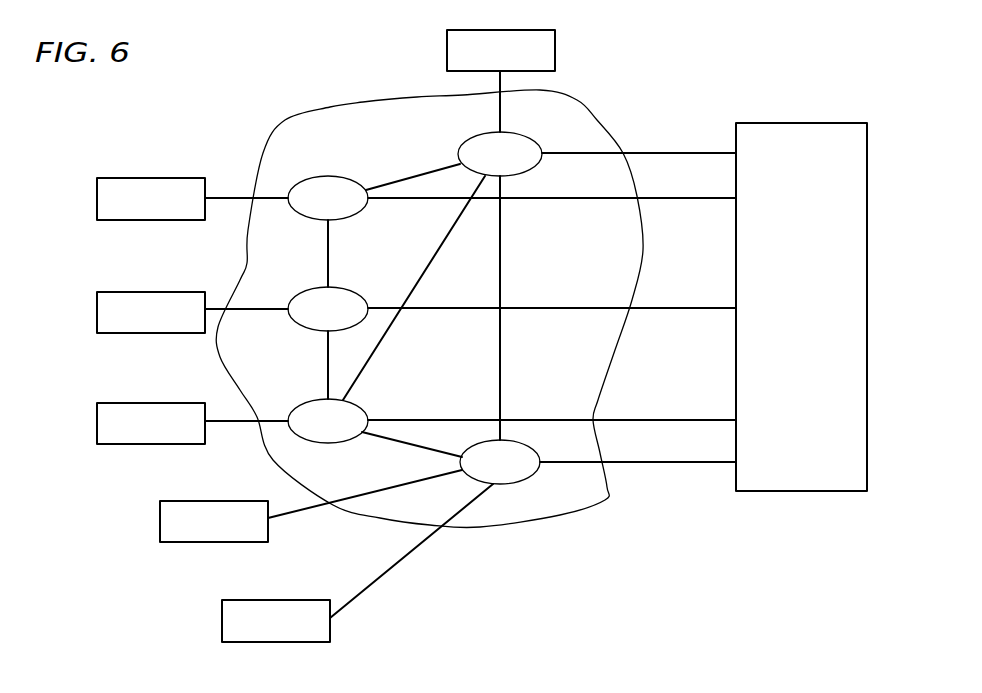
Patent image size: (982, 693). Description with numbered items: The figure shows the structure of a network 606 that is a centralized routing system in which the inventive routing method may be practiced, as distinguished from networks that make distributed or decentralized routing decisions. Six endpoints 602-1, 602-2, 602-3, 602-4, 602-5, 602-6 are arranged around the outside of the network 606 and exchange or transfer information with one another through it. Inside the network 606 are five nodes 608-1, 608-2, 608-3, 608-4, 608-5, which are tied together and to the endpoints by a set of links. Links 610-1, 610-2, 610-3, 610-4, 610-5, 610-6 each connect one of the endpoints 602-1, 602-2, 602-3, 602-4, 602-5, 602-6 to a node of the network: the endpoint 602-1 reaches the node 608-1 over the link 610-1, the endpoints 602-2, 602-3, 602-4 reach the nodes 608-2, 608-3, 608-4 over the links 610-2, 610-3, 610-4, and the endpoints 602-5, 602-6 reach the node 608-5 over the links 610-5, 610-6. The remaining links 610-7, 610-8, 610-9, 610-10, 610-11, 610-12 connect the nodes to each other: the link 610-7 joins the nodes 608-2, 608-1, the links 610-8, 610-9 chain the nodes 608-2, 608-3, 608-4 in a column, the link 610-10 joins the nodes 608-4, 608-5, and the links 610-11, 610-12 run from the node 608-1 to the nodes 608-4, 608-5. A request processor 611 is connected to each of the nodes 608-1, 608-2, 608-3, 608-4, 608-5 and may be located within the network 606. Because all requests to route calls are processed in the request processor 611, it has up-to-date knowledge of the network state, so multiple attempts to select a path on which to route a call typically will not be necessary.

The endpoint 602-1 is at (555, 68).
The endpoint 602-2 is at (143, 178).
The endpoint 602-3 is at (143, 292).
The endpoint 602-4 is at (143, 403).
The endpoint 602-5 is at (203, 501).
The endpoint 602-6 is at (330, 642).
The network 606 is at (567, 515).
The node 608-1 is at (500, 154).
The node 608-2 is at (328, 198).
The node 608-3 is at (328, 309).
The node 608-4 is at (328, 421).
The node 608-5 is at (500, 462).
The link 610-1 is at (500, 103).
The link 610-2 is at (245, 198).
The link 610-3 is at (252, 309).
The link 610-4 is at (245, 421).
The link 610-5 is at (290, 512).
The link 610-6 is at (403, 558).
The link 610-7 is at (425, 173).
The link 610-8 is at (328, 245).
The link 610-9 is at (326, 378).
The link 610-10 is at (413, 443).
The link 610-11 is at (376, 347).
The link 610-12 is at (500, 258).
The request processor 611 is at (783, 491).